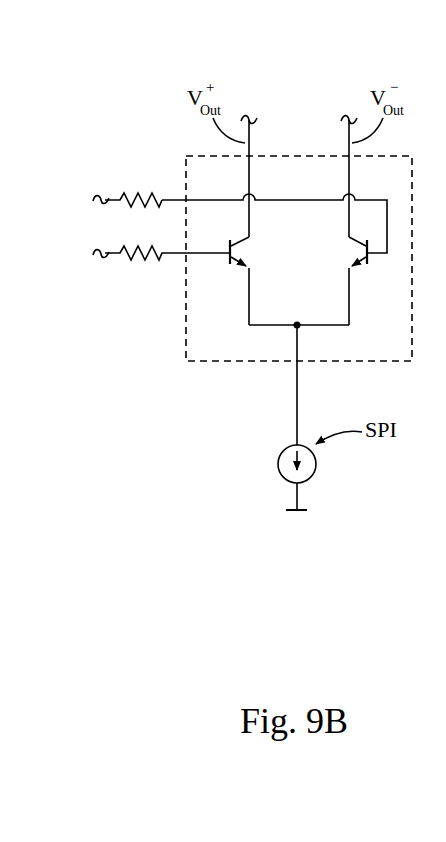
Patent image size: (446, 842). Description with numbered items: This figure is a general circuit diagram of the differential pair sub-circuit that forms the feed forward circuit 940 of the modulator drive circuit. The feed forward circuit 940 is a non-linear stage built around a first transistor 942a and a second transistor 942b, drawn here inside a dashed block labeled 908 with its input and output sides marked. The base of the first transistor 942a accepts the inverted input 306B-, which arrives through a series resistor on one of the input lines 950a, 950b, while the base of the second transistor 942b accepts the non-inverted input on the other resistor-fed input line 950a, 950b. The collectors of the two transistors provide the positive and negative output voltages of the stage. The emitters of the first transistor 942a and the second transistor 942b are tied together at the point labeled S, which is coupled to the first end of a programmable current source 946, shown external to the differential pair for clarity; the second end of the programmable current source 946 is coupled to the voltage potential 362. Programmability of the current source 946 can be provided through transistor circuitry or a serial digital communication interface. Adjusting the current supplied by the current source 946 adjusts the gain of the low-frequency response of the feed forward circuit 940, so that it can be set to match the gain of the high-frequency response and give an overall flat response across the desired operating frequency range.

The feed forward circuit 940 is at (160, 30).
The amplifier block 908 is at (318, 145).
The first transistor 942a is at (244, 252).
The second transistor 942b is at (357, 263).
The positive input with resistor Ra 950a is at (123, 193).
The negative input with resistor Ra 950b is at (130, 256).
The inverted input 306B- is at (175, 253).
The programmable current source 946 is at (282, 448).
The voltage potential 362 is at (300, 515).